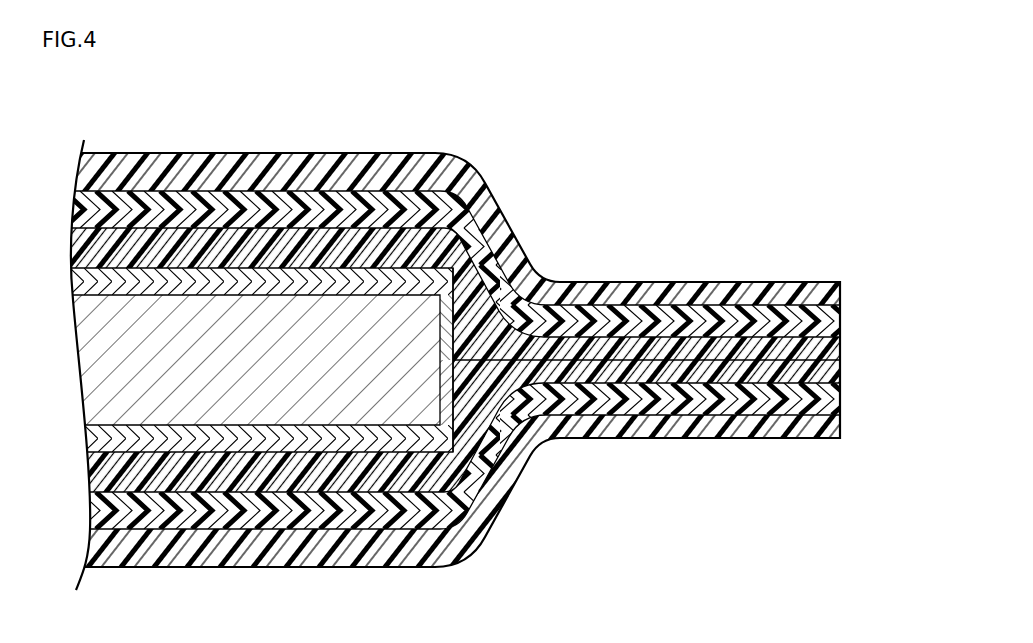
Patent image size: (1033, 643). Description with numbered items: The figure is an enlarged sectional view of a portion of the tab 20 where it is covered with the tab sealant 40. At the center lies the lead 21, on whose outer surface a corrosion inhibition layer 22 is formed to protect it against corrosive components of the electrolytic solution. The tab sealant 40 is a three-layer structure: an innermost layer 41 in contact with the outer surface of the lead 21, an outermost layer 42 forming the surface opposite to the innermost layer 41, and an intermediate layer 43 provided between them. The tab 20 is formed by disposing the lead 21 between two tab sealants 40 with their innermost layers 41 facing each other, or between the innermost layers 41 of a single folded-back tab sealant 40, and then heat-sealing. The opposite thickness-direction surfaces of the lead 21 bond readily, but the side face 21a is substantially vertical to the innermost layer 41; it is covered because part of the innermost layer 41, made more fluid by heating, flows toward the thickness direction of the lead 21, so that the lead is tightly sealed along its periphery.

The tab 20 is at (494, 126).
The lead 21 is at (258, 397).
The side face 21a is at (470, 402).
The corrosion inhibition layer 22 is at (343, 442).
The tab sealant 40 is at (617, 262).
The innermost layer 41 is at (817, 343).
The outermost layer 42 is at (704, 292).
The intermediate layer 43 is at (752, 318).